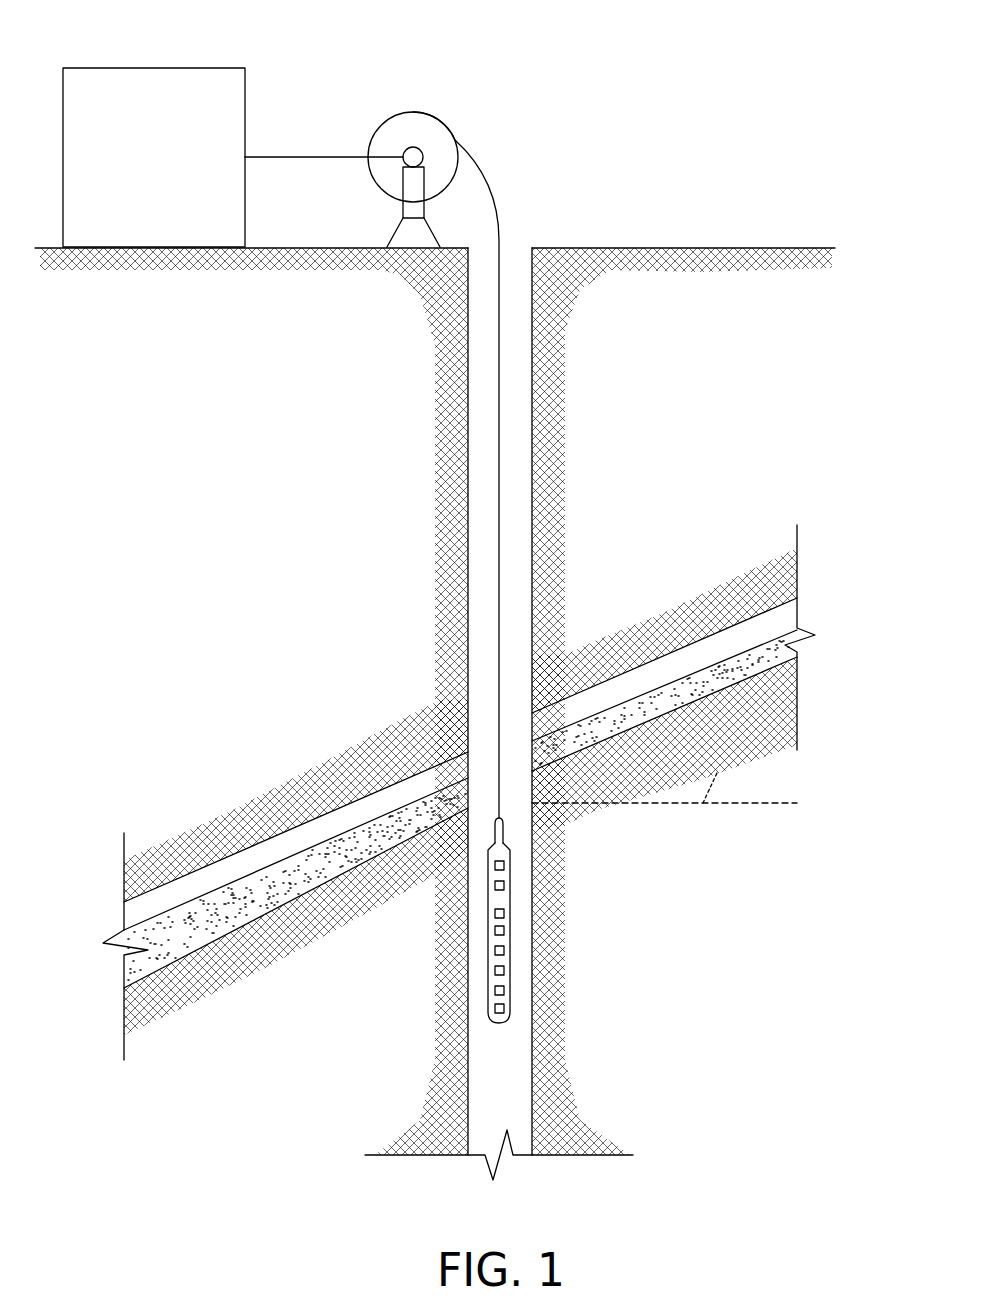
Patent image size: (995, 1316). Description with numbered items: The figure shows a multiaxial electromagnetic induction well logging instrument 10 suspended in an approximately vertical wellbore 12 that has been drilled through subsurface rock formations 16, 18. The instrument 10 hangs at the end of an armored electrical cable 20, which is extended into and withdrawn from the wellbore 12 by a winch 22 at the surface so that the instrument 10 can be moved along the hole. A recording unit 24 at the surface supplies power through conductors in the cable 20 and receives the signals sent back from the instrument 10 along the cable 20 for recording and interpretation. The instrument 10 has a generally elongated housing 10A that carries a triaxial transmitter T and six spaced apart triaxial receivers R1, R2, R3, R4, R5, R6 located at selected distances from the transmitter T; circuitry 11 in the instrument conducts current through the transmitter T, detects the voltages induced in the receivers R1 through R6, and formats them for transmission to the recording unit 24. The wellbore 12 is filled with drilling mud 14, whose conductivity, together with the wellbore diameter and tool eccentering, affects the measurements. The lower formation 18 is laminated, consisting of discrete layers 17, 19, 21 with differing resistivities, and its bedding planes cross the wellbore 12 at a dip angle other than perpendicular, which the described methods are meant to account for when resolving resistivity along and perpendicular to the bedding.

The recording unit 24 is at (153, 66).
The winch 22 is at (425, 128).
The armored electrical cable 20 is at (493, 183).
The subsurface rock formation 16 is at (641, 292).
The wellbore 12 is at (466, 632).
The drilling mud 14 is at (515, 1091).
The layer 17 is at (590, 698).
The layer 19 is at (659, 702).
The layer 21 is at (722, 702).
The laminated rock formation 18 is at (177, 963).
The multiaxial induction well logging instrument 10 is at (488, 888).
The elongated housing 10A is at (488, 848).
The circuitry 11 is at (512, 860).
The triaxial transmitter T is at (512, 887).
The triaxial receiver R1 is at (512, 913).
The triaxial receiver R2 is at (512, 930).
The triaxial receiver R3 is at (512, 950).
The triaxial receiver R4 is at (512, 970).
The triaxial receiver R5 is at (488, 990).
The triaxial receiver R6 is at (488, 1008).